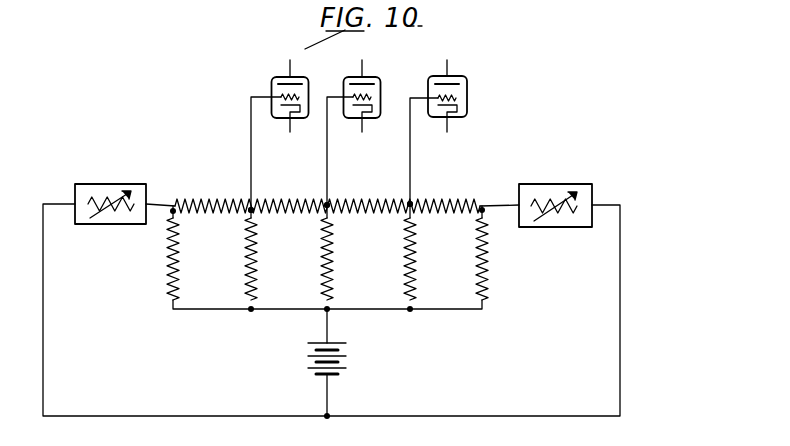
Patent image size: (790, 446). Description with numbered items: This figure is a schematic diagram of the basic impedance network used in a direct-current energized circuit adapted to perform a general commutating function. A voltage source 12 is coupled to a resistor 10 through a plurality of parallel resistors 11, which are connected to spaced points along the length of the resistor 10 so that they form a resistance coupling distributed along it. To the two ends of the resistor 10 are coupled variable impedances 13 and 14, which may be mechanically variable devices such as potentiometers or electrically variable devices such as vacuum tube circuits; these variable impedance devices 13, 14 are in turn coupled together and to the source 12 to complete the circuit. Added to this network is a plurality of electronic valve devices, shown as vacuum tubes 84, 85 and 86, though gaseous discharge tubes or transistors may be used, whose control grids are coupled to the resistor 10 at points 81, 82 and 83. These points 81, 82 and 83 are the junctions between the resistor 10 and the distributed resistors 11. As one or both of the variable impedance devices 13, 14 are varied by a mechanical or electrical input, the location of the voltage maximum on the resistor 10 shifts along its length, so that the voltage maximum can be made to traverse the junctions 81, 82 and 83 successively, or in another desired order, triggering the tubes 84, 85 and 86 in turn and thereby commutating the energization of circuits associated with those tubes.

The resistor 10 is at (200, 201).
The parallel resistors 11 is at (248, 252).
The voltage source 12 is at (345, 362).
The variable impedance 13 is at (85, 187).
The variable impedance 14 is at (541, 185).
The point 81 is at (254, 201).
The point 82 is at (330, 201).
The point 83 is at (412, 202).
The vacuum tube 84 is at (274, 78).
The vacuum tube 85 is at (345, 77).
The vacuum tube 86 is at (469, 74).